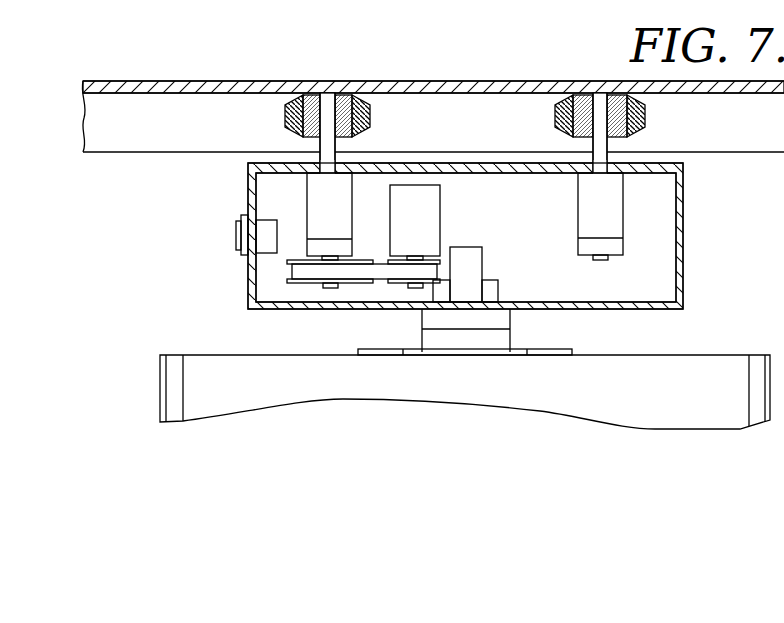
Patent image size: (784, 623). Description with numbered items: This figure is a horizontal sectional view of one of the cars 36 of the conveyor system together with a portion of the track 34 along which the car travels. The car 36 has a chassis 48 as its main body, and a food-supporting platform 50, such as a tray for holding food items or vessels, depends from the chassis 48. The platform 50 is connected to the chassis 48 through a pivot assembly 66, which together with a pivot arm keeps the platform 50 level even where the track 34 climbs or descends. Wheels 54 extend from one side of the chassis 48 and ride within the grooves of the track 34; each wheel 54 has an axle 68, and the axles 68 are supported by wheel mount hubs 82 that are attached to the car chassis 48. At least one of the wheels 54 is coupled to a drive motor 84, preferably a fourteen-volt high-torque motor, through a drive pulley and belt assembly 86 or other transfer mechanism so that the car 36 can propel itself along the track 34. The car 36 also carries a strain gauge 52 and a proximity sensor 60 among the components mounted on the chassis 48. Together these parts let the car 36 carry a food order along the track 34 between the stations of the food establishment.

The track 34 is at (465, 80).
The car 36 is at (690, 251).
The chassis 48 is at (250, 285).
The food-supporting platform 50 is at (172, 380).
The strain gauge 52 is at (472, 269).
The wheels 54 is at (366, 96).
The proximity sensor 60 is at (237, 232).
The pivot assembly 66 is at (477, 329).
The axle 68 is at (338, 142).
The wheel mount hubs 82 is at (318, 207).
The drive motor 84 is at (430, 206).
The drive pulley and belt assembly 86 is at (304, 272).